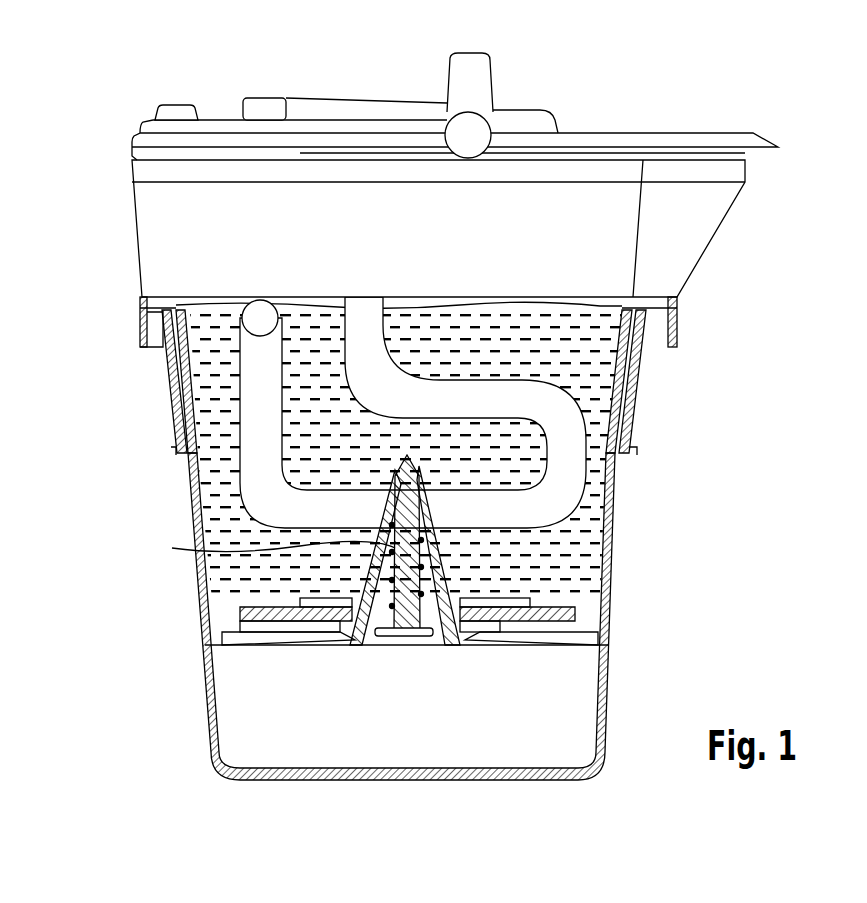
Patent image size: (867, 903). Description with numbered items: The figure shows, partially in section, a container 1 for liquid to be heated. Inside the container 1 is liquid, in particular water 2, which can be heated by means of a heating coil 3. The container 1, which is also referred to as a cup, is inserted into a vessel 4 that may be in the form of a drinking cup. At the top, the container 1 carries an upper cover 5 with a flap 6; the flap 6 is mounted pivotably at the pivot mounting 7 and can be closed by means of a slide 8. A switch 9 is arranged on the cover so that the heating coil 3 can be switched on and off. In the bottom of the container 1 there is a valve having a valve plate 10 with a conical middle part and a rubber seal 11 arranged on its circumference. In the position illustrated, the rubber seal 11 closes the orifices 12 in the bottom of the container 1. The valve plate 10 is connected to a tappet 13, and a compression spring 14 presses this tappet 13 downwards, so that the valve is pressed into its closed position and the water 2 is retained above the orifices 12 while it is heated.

The container 1 is at (640, 362).
The water 2 is at (634, 432).
The heating coil 3 is at (248, 384).
The vessel 4 is at (200, 613).
The upper cover 5 is at (135, 243).
The flap 6 is at (667, 132).
The pivot mounting 7 is at (468, 140).
The slide 8 is at (265, 98).
The switch 9 is at (172, 105).
The valve plate 10 is at (420, 548).
The rubber seal 11 is at (578, 615).
The orifices 12 is at (258, 638).
The tappet 13 is at (382, 636).
The compression spring 14 is at (267, 552).